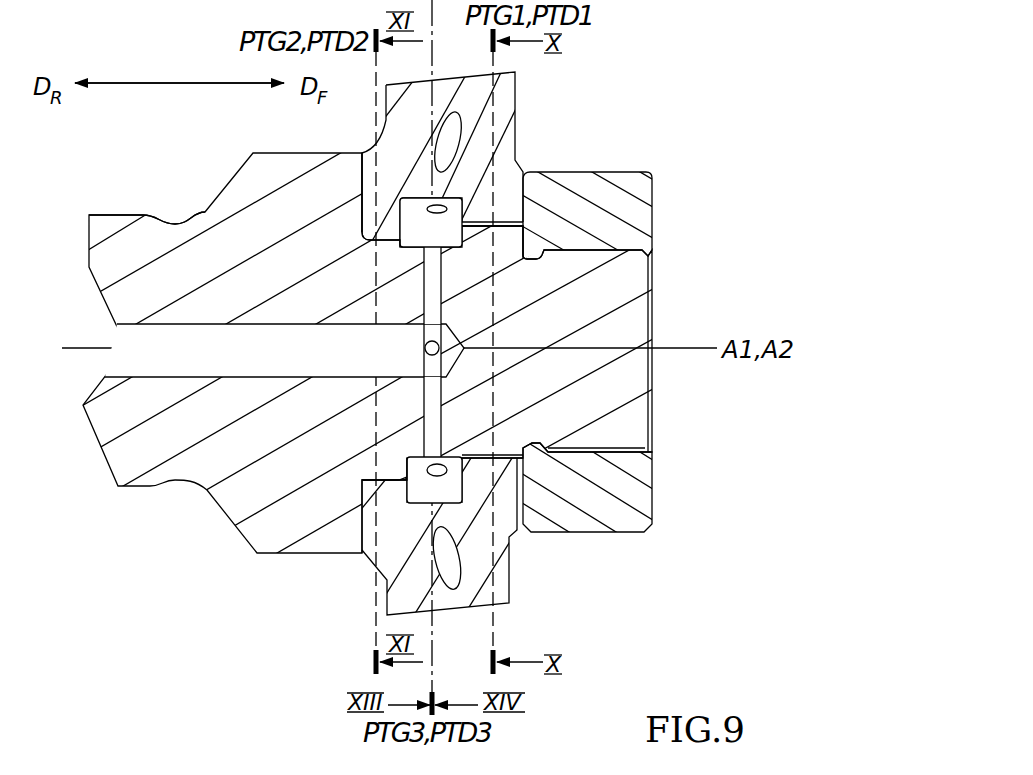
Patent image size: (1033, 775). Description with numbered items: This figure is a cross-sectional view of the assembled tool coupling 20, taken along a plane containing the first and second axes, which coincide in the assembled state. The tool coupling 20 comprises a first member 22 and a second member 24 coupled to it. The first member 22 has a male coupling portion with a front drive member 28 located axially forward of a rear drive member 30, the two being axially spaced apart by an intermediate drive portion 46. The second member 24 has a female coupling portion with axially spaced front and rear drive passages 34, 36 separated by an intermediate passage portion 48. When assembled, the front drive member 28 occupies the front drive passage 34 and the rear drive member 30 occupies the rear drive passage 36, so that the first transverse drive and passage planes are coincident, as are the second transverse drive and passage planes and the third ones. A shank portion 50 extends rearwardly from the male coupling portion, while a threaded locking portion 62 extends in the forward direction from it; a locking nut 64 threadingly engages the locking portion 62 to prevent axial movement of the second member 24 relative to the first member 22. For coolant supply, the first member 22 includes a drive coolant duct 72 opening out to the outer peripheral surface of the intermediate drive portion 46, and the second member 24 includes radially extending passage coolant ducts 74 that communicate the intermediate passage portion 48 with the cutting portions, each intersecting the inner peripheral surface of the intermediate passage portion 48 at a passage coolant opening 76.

The tool coupling 20 is at (390, 353).
The first member 22 is at (253, 490).
The second member 24 is at (498, 228).
The front drive member 28 is at (523, 525).
The rear drive member 30 is at (393, 238).
The front drive passage 34 is at (597, 197).
The rear drive passage 36 is at (385, 472).
The intermediate drive portion 46 is at (500, 177).
The intermediate passage portion 48 is at (452, 565).
The shank portion 50 is at (143, 245).
The threaded locking portion 62 is at (603, 300).
The locking nut 64 is at (603, 190).
The drive coolant duct 72 is at (435, 288).
The passage coolant duct 74 is at (452, 238).
The passage coolant opening 76 is at (440, 211).